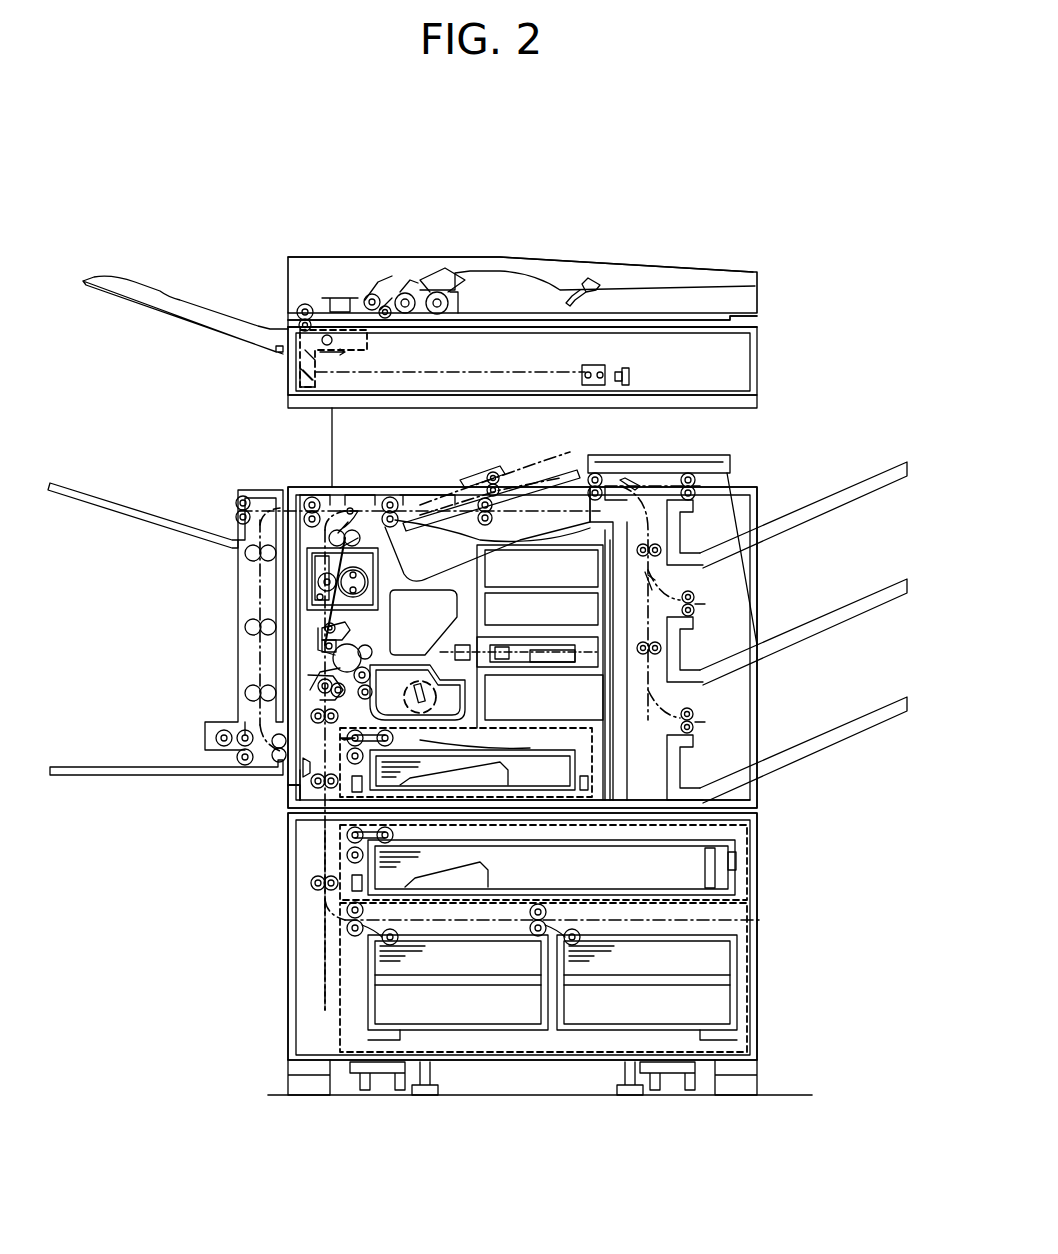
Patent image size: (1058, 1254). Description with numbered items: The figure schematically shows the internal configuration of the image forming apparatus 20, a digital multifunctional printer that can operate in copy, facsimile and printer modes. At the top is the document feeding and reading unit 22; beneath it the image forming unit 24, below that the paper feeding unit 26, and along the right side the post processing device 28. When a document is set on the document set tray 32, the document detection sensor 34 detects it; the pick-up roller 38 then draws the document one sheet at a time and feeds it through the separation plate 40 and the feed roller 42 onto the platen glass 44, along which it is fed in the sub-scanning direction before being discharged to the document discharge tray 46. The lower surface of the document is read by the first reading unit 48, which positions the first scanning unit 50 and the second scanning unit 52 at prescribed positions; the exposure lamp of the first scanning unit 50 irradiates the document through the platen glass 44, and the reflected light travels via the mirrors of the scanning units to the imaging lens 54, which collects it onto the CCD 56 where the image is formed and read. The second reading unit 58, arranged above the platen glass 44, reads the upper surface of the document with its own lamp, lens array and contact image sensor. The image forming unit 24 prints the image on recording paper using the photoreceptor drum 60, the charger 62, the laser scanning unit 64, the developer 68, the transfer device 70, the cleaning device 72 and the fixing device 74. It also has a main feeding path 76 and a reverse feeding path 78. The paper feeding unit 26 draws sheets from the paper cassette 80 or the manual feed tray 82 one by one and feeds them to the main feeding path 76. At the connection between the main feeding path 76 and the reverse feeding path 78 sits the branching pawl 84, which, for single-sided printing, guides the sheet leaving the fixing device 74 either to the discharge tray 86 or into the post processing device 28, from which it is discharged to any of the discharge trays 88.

The image forming apparatus 20 is at (540, 192).
The document feeding and reading unit 22 is at (792, 339).
The image forming unit 24 is at (306, 460).
The paper feeding unit 26 is at (258, 932).
The post processing device 28 is at (817, 478).
The document set tray 32 is at (475, 270).
The document detection sensor 34 is at (590, 280).
The pick-up roller 38 is at (437, 292).
The separation plate 40 is at (368, 295).
The feed roller 42 is at (402, 285).
The platen glass 44 is at (706, 325).
The document discharge tray 46 is at (128, 292).
The first reading unit 48 is at (748, 371).
The first scanning unit 50 is at (368, 353).
The second scanning unit 52 is at (300, 376).
The imaging lens 54 is at (598, 366).
The CCD 56 is at (632, 368).
The second reading unit 58 is at (337, 295).
The photoreceptor drum 60 is at (347, 658).
The charger 62 is at (335, 645).
The laser scanning unit 64 is at (481, 652).
The developer 68 is at (360, 688).
The transfer device 70 is at (330, 648).
The cleaning device 72 is at (330, 635).
The fixing device 74 is at (320, 580).
The main feeding path 76 is at (420, 700).
The reverse feeding path 78 is at (355, 650).
The paper cassette 80 is at (725, 860).
The manual feed tray 82 is at (133, 768).
The branching pawl 84 is at (355, 510).
The discharge tray 86 is at (555, 470).
The discharge trays 88 is at (885, 478).